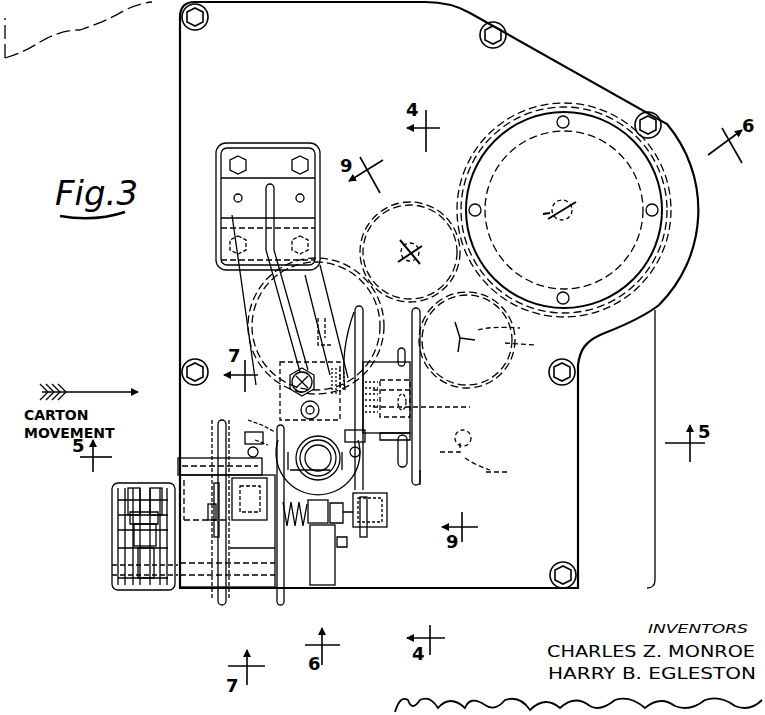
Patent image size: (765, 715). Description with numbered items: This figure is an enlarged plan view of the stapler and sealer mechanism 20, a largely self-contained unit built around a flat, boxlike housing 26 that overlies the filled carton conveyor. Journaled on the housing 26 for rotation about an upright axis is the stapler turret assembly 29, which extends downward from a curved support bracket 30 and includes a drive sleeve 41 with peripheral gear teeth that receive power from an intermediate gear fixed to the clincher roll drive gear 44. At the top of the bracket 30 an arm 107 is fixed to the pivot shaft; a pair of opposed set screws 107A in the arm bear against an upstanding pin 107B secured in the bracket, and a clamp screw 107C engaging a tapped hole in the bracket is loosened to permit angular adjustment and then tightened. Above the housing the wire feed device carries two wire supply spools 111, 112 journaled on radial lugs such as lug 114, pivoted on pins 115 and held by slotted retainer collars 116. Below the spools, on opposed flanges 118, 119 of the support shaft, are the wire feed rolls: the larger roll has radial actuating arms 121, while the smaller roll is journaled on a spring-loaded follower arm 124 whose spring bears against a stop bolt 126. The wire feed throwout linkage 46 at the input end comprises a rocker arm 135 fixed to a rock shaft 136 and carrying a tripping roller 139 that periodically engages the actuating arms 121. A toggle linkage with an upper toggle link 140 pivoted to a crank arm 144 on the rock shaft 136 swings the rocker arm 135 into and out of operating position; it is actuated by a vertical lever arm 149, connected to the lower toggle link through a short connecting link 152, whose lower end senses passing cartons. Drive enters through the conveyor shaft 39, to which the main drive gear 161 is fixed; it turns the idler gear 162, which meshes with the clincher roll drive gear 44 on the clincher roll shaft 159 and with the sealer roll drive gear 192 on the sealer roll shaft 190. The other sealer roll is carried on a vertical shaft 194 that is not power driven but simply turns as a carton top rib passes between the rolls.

The stapler and sealer mechanism 20 is at (178, 98).
The housing 26 is at (178, 297).
The stapler turret assembly 29 is at (352, 560).
The curved support bracket 30 is at (243, 290).
The shaft 39 is at (566, 198).
The drive sleeve 41 is at (250, 428).
The clincher roll drive gear 44 is at (332, 255).
The wire feed throwout linkage 46 is at (118, 533).
The arm 107 is at (296, 374).
The set screws 107A is at (336, 372).
The upstanding pin 107B is at (288, 350).
The clamp screw 107C is at (318, 465).
The wire supply spool 111 is at (420, 486).
The wire supply spool 112 is at (218, 600).
The radial lug 114 is at (318, 530).
The pins 115 is at (196, 514).
The slotted retainer collars 116 is at (436, 421).
The flange 118 is at (325, 322).
The flange 119 is at (320, 585).
The radial actuating arms 121 is at (218, 444).
The follower arm 124 is at (378, 527).
The stop bolt 126 is at (367, 528).
The rocker arm 135 is at (182, 476).
The rock shaft 136 is at (188, 598).
The tripping roller 139 is at (192, 456).
The upper toggle link 140 is at (136, 527).
The crank arm 144 is at (132, 550).
The lever arm 149 is at (126, 486).
The connecting link 152 is at (136, 512).
The clincher roll shaft 159 is at (353, 385).
The main drive gear 161 is at (478, 135).
The idler gear 162 is at (402, 200).
The sealer roll shaft 190 is at (514, 325).
The sealer roll drive gear 192 is at (535, 344).
The vertical shaft 194 is at (490, 455).